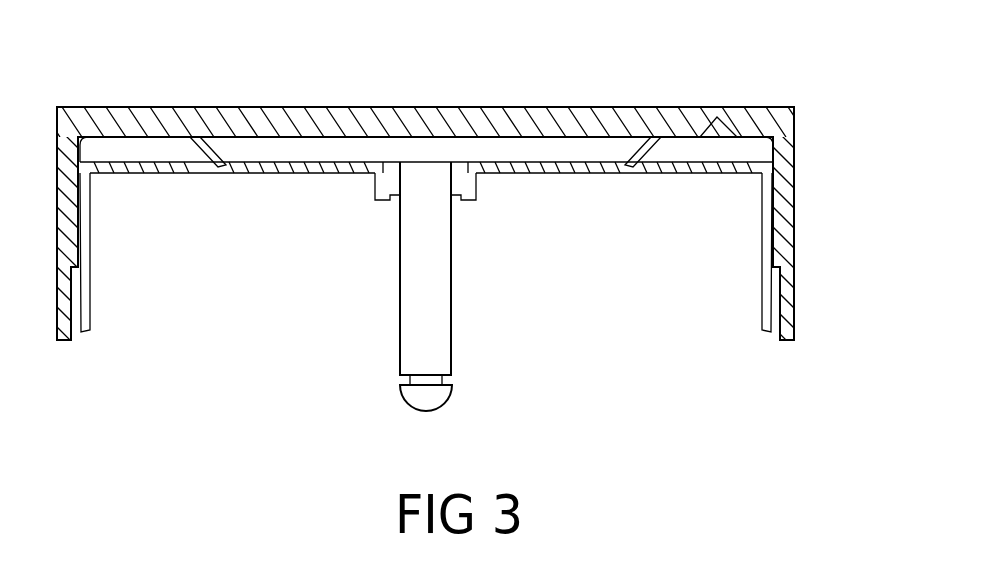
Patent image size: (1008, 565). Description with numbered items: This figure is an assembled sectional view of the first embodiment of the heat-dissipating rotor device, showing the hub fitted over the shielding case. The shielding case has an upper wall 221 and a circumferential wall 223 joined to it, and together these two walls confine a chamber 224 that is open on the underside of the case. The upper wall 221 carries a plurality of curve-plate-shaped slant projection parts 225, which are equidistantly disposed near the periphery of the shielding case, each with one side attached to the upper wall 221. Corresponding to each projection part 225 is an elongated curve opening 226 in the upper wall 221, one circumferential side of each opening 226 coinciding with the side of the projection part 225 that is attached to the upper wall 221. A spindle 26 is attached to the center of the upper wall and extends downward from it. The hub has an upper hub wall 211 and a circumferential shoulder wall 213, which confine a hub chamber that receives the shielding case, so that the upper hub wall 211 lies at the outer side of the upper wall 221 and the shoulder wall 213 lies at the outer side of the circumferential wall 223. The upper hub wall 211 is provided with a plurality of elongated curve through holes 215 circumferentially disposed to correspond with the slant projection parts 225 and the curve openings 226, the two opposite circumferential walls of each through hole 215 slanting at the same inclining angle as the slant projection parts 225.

The upper hub wall 211 is at (512, 113).
The circumferential shoulder wall 213 is at (788, 150).
The elongated curve through hole 215 is at (717, 117).
The upper wall 221 is at (297, 163).
The circumferential wall 223 is at (770, 325).
The chamber 224 is at (313, 267).
The slant projection part 225 is at (655, 137).
The elongated curve opening 226 is at (160, 167).
The spindle 26 is at (436, 347).